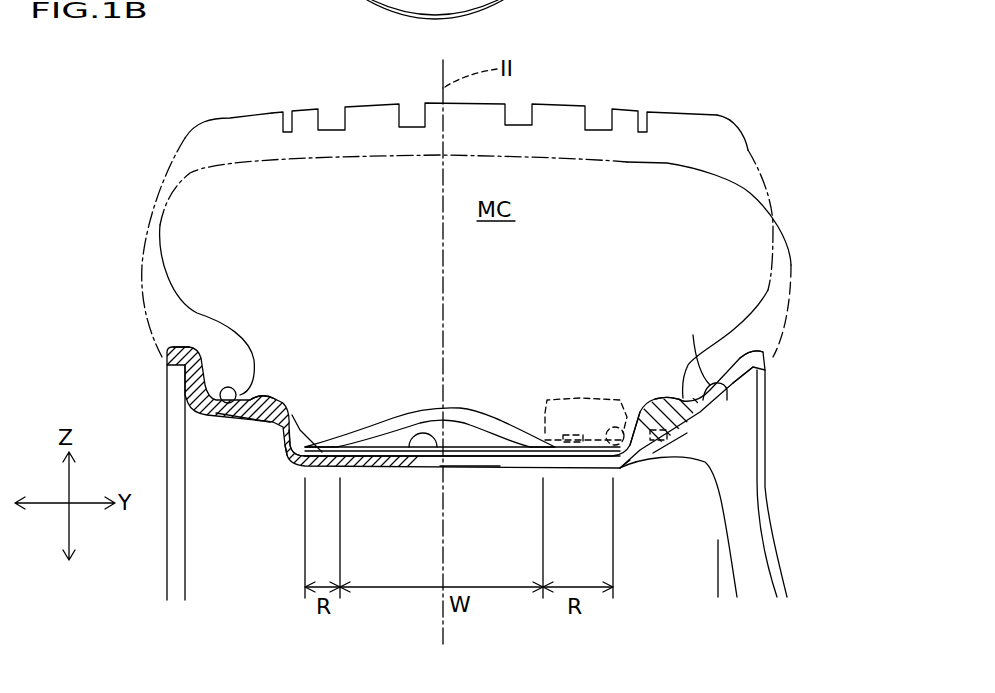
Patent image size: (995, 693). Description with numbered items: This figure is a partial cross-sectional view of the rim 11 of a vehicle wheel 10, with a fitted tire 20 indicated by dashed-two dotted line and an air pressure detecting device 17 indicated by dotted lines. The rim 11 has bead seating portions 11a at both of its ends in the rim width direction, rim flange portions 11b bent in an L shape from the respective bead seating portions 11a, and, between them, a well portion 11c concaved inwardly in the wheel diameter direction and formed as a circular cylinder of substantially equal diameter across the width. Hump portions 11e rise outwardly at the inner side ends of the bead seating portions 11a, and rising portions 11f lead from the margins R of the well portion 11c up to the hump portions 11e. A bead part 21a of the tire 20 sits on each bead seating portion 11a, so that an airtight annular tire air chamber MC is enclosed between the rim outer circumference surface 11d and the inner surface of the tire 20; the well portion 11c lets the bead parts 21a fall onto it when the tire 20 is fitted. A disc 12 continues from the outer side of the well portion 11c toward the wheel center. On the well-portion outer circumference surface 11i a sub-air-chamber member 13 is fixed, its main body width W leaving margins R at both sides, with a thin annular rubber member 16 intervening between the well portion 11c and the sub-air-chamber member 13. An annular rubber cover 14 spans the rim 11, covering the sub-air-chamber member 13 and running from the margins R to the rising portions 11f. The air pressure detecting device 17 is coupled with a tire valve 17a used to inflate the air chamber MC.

The vehicle wheel 10 is at (795, 388).
The rim 11 is at (266, 486).
The bead seating portion 11a is at (217, 415).
The rim flange portion 11b is at (163, 360).
The well portion 11c is at (310, 445).
The rim outer circumference surface 11d is at (640, 388).
The hump portion 11e is at (264, 395).
The rising portion 11f is at (283, 450).
The well-portion outer circumference surface 11i is at (420, 447).
The disc 12 is at (765, 487).
The sub-air-chamber member 13 is at (465, 405).
The cover 14 is at (500, 418).
The rubber member 16 is at (470, 468).
The air pressure detecting device 17 is at (560, 400).
The tire valve 17a is at (673, 457).
The tire 20 is at (668, 110).
The bead part 21a is at (232, 389).